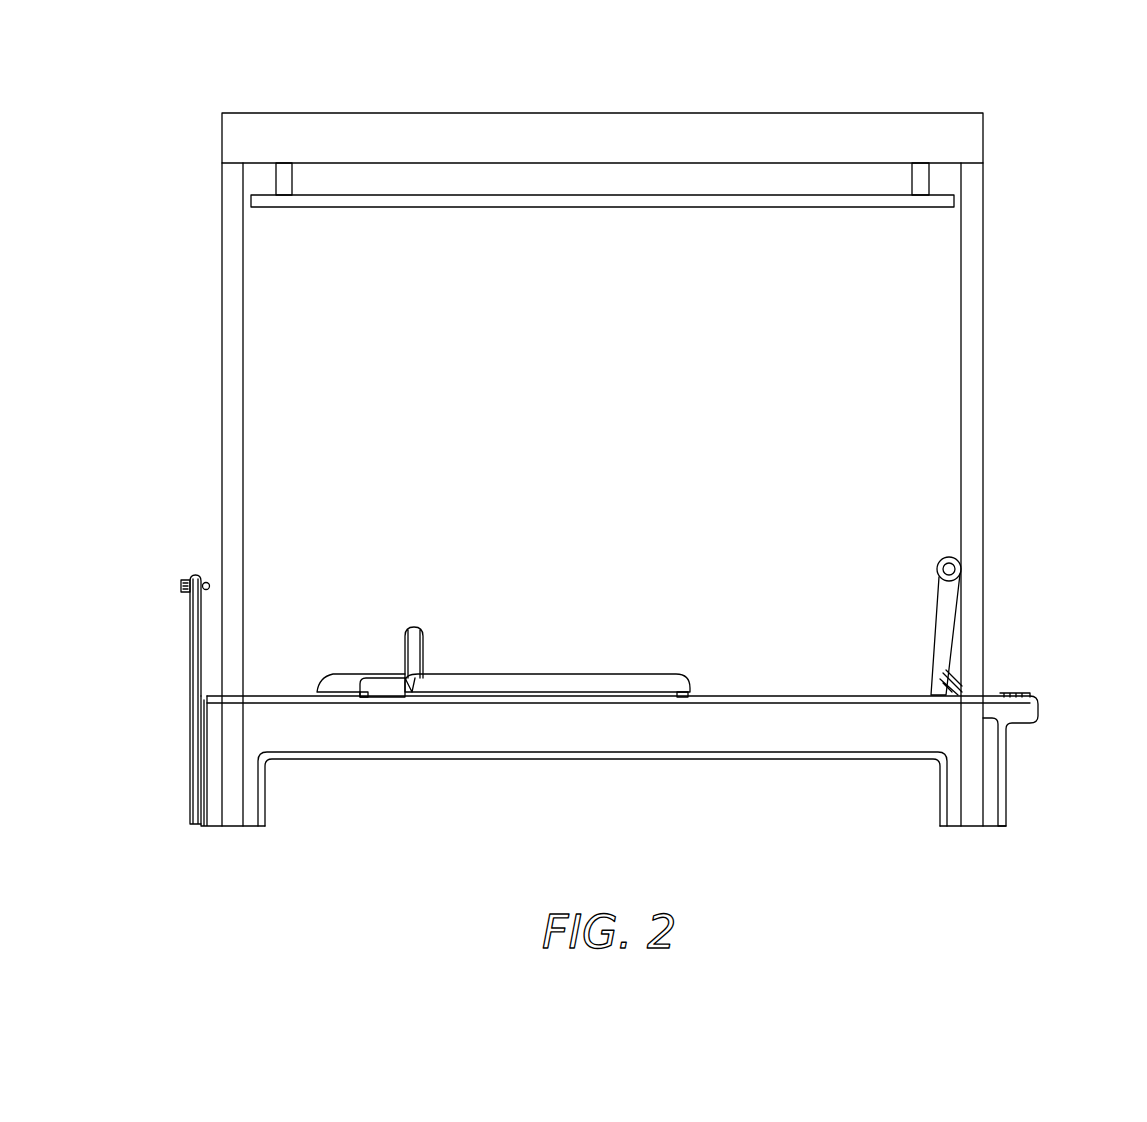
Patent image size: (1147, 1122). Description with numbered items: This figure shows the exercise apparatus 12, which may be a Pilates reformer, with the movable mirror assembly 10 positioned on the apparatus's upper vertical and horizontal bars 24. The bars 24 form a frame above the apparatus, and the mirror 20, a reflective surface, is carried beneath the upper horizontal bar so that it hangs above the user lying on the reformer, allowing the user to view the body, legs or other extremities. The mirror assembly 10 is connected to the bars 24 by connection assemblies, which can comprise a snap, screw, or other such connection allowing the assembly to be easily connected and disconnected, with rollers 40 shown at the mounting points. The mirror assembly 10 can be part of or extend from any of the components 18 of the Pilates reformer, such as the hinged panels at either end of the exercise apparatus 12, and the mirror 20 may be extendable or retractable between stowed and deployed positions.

The mirror assembly 10 is at (1024, 255).
The exercise apparatus 12 is at (1047, 670).
The components 18 is at (190, 647).
The mirror 20 is at (791, 208).
The upper vertical or horizontal bars 24 is at (372, 128).
The rollers 40 is at (912, 180).